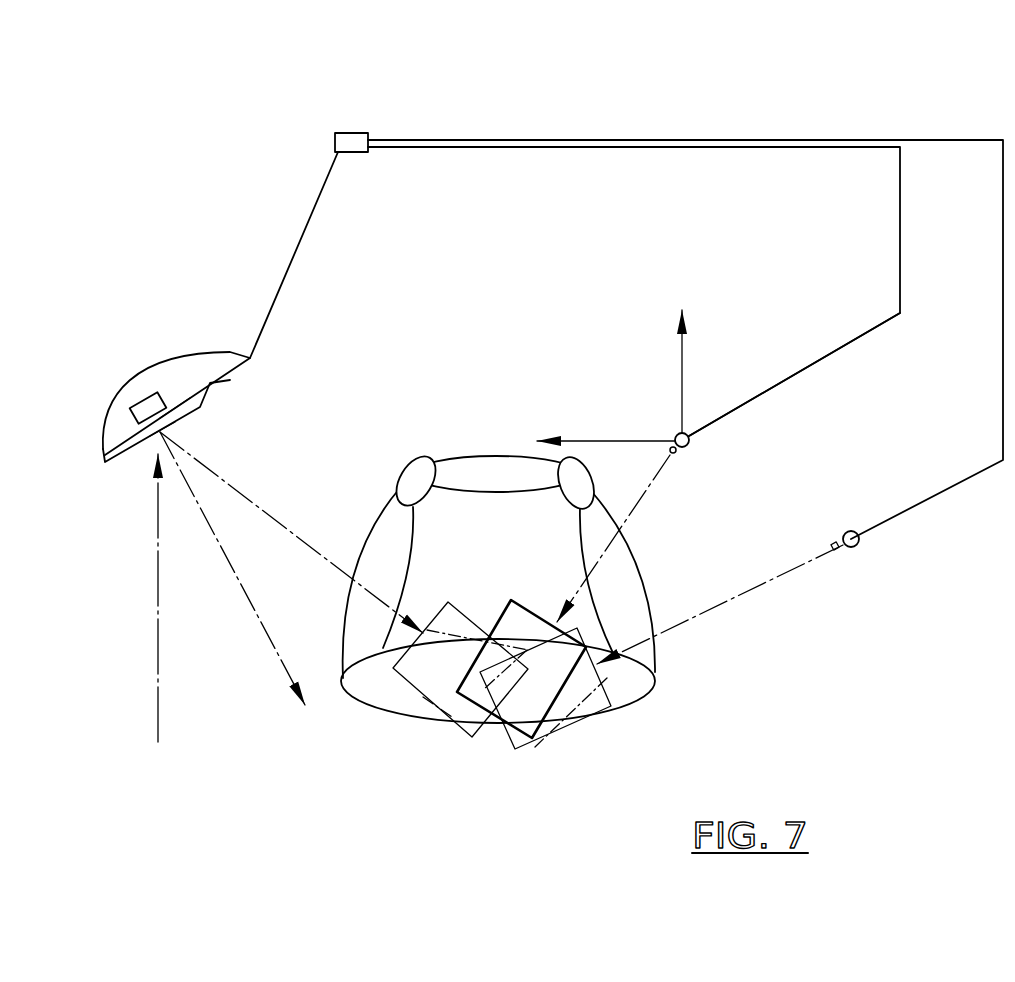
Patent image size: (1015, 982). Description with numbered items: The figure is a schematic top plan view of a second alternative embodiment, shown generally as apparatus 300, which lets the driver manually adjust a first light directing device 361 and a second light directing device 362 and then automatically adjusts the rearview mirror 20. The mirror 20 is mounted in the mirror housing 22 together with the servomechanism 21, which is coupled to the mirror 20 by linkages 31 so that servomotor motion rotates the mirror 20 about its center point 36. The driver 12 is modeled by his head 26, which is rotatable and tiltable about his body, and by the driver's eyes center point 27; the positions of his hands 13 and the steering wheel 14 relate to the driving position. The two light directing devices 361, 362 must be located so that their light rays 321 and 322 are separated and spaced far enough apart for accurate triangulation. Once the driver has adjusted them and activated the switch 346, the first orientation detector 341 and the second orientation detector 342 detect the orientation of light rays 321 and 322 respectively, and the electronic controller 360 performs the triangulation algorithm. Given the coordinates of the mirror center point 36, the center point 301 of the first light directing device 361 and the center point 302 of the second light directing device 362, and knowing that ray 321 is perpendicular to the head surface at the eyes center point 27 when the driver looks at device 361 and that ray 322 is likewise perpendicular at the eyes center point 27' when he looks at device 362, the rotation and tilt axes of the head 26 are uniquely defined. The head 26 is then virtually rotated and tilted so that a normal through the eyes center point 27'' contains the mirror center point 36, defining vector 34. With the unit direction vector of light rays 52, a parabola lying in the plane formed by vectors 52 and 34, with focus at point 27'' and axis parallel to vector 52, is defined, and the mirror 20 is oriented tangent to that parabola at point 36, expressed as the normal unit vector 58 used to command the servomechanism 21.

The apparatus 300 is at (678, 115).
The electronic controller 360 is at (355, 152).
The mirror housing 22 is at (125, 388).
The rearview mirror 20 is at (103, 457).
The servomechanism 21 is at (150, 390).
The center point of mirror 36 is at (162, 425).
The linkages 31 is at (170, 413).
The light rays 52 is at (157, 598).
The unit vector normal to mirror surface 58 is at (207, 520).
The vector 34 is at (257, 502).
The driver 12 is at (365, 707).
The steering wheel 14 is at (487, 490).
The hands 13 is at (407, 462).
The driver's eyes center point 27 is at (521, 644).
The driver's eyes center point 27' is at (590, 688).
The driver's eyes center point 27'' is at (460, 684).
The driver's head 26 is at (535, 737).
The center point of first light directing device 301 is at (678, 435).
The switch 346 is at (670, 437).
The first orientation detector 341 is at (690, 433).
The light ray 321 is at (660, 478).
The first light directing device 361 is at (696, 452).
The second light directing device 362 is at (870, 548).
The center point of second light directing device 302 is at (852, 548).
The second orientation detector 342 is at (851, 530).
The light ray 322 is at (730, 600).